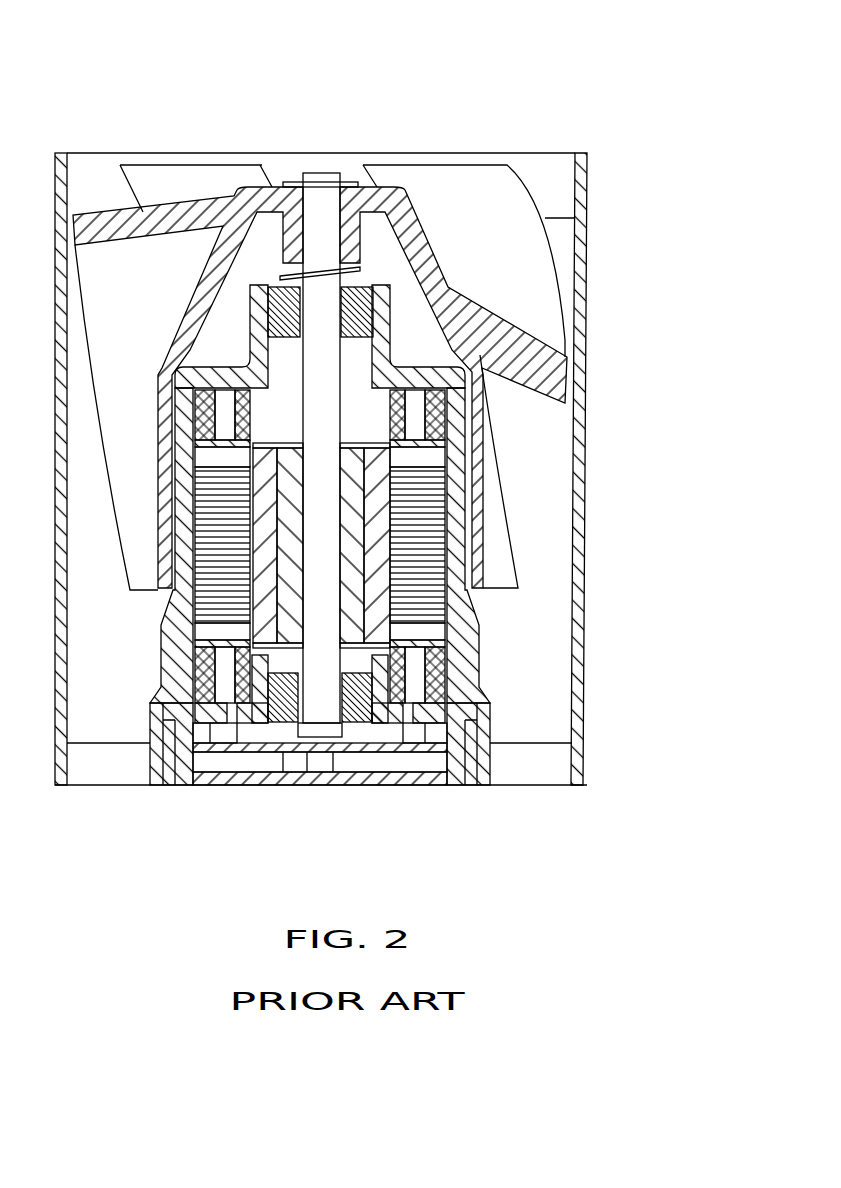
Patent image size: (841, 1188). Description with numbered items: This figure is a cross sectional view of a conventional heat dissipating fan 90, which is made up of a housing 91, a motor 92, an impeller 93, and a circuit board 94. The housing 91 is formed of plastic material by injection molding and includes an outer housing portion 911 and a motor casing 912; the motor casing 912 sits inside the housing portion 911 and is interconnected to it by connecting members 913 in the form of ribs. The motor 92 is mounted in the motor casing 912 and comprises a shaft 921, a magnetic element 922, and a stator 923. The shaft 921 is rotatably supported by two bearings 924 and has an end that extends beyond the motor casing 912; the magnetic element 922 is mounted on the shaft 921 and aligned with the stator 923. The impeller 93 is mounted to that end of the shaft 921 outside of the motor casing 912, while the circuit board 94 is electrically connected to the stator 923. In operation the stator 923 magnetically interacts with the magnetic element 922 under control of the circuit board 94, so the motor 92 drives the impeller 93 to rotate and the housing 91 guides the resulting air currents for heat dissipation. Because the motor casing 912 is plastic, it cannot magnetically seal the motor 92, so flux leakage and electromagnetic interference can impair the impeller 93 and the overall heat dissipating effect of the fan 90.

The heat dissipating fan 90 is at (533, 118).
The housing 91 is at (687, 602).
The housing portion 911 is at (585, 605).
The motor casing 912 is at (468, 667).
The connecting members 913 is at (103, 772).
The motor 92 is at (353, 417).
The shaft 921 is at (327, 377).
The magnetic element 922 is at (377, 543).
The stator 923 is at (417, 510).
The bearings 924 is at (287, 283).
The impeller 93 is at (443, 187).
The circuit board 94 is at (408, 748).